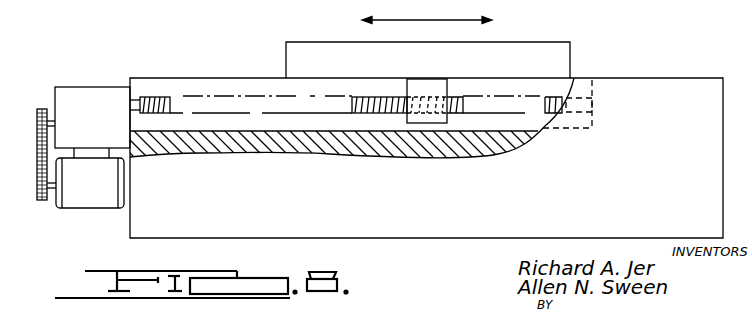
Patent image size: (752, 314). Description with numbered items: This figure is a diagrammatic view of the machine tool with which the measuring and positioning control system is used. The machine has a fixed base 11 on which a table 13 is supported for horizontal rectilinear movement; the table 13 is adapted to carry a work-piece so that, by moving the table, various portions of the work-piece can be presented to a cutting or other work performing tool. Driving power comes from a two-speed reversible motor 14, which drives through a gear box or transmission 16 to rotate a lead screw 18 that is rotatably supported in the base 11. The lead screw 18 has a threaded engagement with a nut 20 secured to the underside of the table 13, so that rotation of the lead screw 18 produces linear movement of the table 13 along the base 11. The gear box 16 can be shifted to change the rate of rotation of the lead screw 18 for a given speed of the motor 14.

The fixed base 11 is at (488, 163).
The table 13 is at (526, 69).
The two-speed reversible motor 14 is at (98, 186).
The gear box 16 is at (100, 124).
The lead screw 18 is at (161, 97).
The nut 20 is at (427, 123).